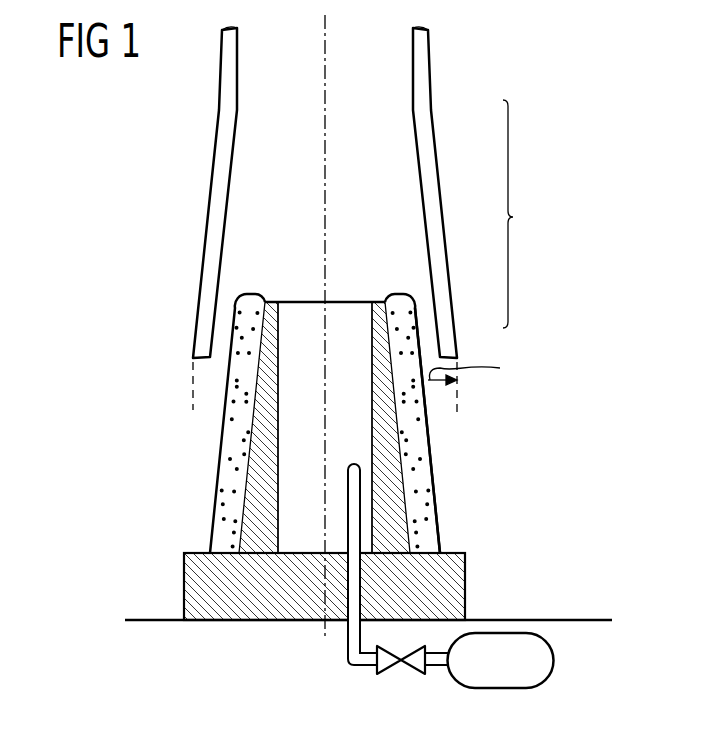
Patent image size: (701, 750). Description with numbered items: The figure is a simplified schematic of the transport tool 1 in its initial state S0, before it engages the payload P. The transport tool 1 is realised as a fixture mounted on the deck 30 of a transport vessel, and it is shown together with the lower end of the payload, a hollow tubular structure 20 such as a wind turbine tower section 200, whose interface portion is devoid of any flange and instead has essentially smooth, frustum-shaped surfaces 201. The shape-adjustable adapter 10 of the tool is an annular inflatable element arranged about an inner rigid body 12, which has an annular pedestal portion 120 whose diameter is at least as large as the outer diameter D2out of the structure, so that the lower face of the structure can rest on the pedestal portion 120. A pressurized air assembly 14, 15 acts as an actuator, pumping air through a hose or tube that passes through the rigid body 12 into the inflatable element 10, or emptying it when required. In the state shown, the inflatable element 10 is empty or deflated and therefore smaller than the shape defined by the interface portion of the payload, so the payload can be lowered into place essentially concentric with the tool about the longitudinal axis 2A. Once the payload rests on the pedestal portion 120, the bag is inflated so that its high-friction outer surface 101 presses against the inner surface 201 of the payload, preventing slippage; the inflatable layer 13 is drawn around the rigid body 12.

The transport tool 1 is at (152, 360).
The longitudinal axis 2A is at (325, 65).
The shape-adjustable adapter 10 is at (376, 404).
The inner rigid body 12 is at (293, 310).
The porous layer 13 is at (425, 440).
The pressurized air assembly 14 is at (410, 668).
The pressurized air assembly 15 is at (555, 658).
The hollow tubular structure 20 is at (422, 68).
The deck 30 is at (497, 619).
The high-friction surface 101 is at (438, 507).
The annular pedestal portion 120 is at (195, 552).
The wall section 200 is at (532, 214).
The surface 201 is at (224, 226).
The outer diameter D2out is at (496, 372).
The initial state S0 is at (534, 440).